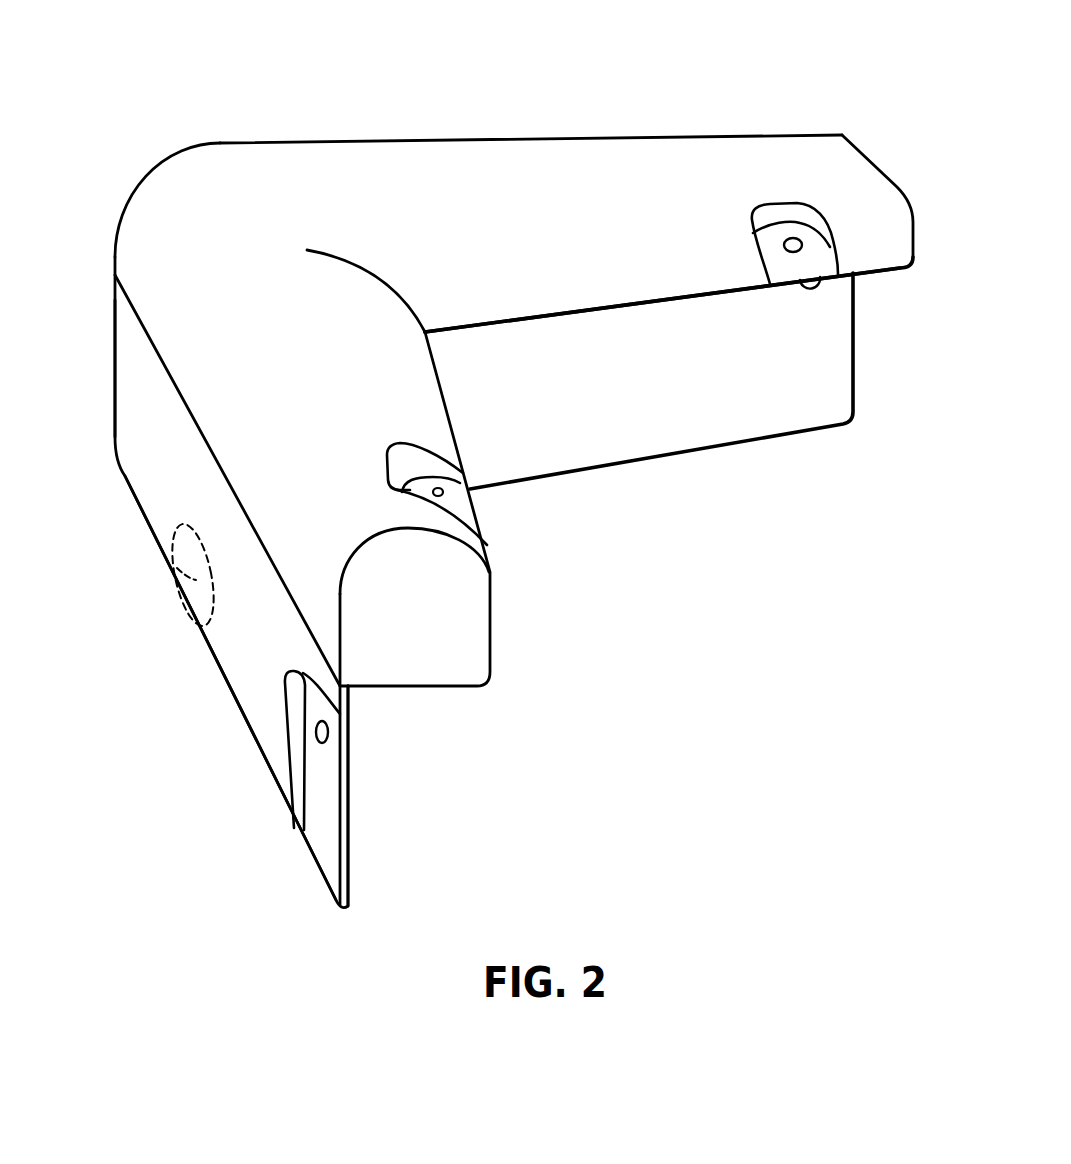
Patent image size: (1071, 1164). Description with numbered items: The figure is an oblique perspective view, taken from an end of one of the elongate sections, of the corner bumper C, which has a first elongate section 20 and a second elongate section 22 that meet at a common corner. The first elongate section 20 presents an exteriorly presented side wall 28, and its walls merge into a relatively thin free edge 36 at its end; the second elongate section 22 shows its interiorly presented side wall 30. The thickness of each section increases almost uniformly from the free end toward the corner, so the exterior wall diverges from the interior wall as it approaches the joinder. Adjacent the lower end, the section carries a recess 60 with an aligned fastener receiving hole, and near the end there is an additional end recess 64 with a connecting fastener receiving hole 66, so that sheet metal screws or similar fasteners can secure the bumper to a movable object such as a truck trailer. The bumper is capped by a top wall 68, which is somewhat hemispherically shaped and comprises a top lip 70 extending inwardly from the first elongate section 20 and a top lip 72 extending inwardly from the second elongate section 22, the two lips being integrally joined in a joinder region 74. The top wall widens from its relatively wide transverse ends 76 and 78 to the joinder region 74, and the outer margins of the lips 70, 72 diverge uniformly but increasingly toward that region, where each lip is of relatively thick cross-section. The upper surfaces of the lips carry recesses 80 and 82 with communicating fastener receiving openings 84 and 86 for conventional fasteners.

The first elongate section 20 is at (216, 705).
The second elongate section 22 is at (694, 93).
The corner bumper C is at (516, 120).
The exteriorly presented side wall 28 is at (140, 462).
The interiorly presented side wall 30 is at (730, 407).
The free edge 36 is at (342, 797).
The recess 60 is at (193, 580).
The end recess 64 is at (323, 837).
The fastener receiving hole 66 is at (823, 287).
The top wall 68 is at (435, 163).
The top lip 70 is at (505, 540).
The top lip 72 is at (628, 312).
The joinder region 74 is at (367, 265).
The transverse end 76 is at (467, 638).
The transverse end 78 is at (884, 174).
The recess 80 is at (395, 463).
The recess 82 is at (770, 215).
The fastener receiving opening 84 is at (436, 488).
The fastener receiving opening 86 is at (795, 238).